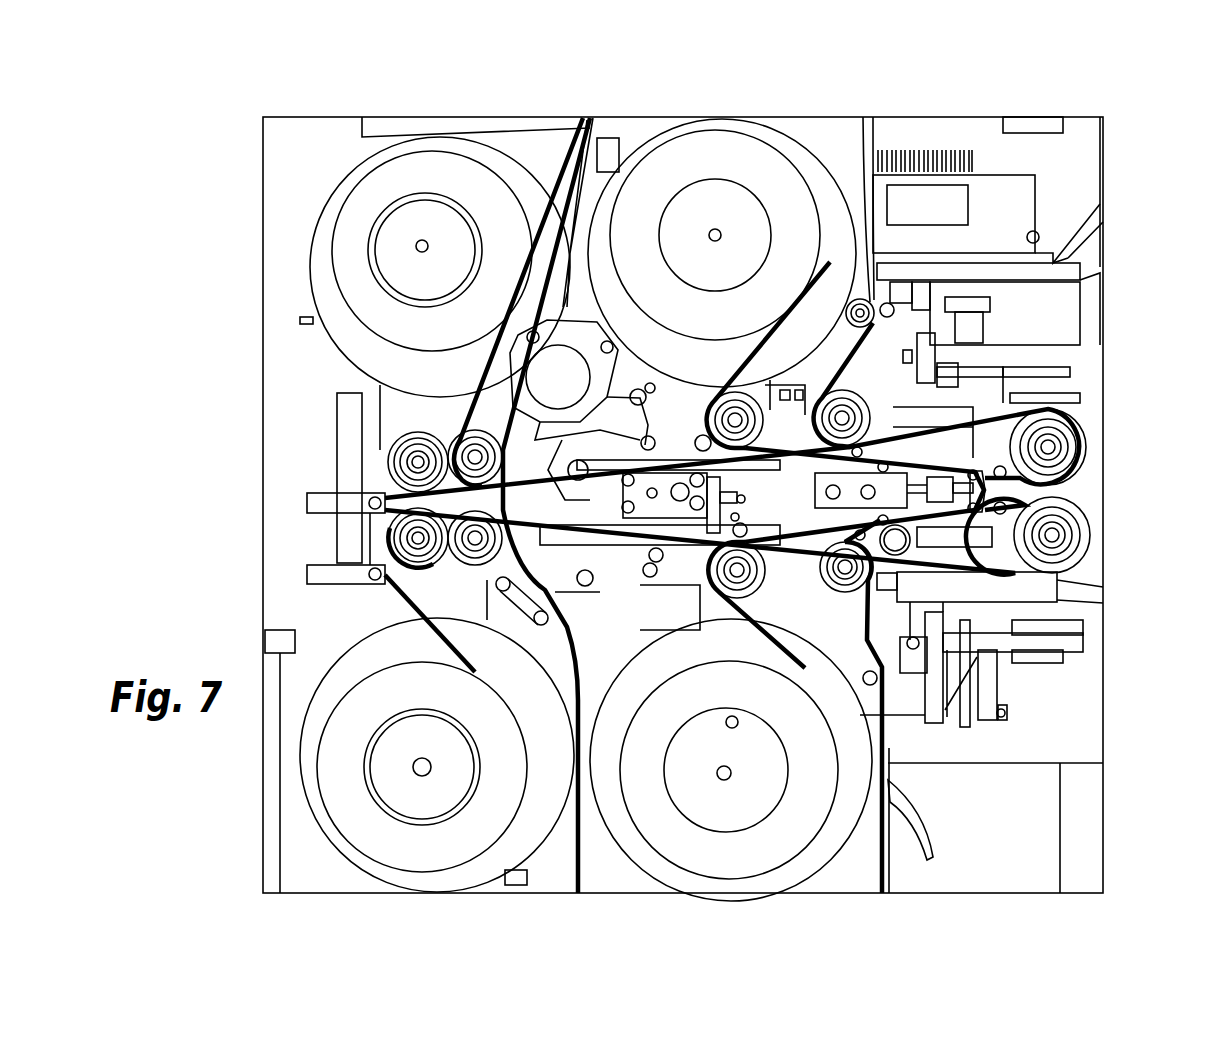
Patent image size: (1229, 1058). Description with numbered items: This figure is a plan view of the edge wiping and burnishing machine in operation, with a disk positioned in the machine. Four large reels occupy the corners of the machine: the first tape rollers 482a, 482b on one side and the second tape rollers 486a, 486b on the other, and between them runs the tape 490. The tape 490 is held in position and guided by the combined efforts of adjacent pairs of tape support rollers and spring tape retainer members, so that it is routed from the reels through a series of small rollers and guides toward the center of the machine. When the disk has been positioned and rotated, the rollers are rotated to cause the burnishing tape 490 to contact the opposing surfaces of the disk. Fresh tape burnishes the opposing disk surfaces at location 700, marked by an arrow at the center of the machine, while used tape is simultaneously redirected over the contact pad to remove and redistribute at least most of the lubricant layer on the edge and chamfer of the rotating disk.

The second tape roller 486b is at (470, 145).
The first tape roller 482b is at (718, 118).
The second tape roller 486a is at (448, 867).
The first tape roller 482a is at (750, 885).
The tape 490 is at (612, 92).
The location 700 is at (988, 488).